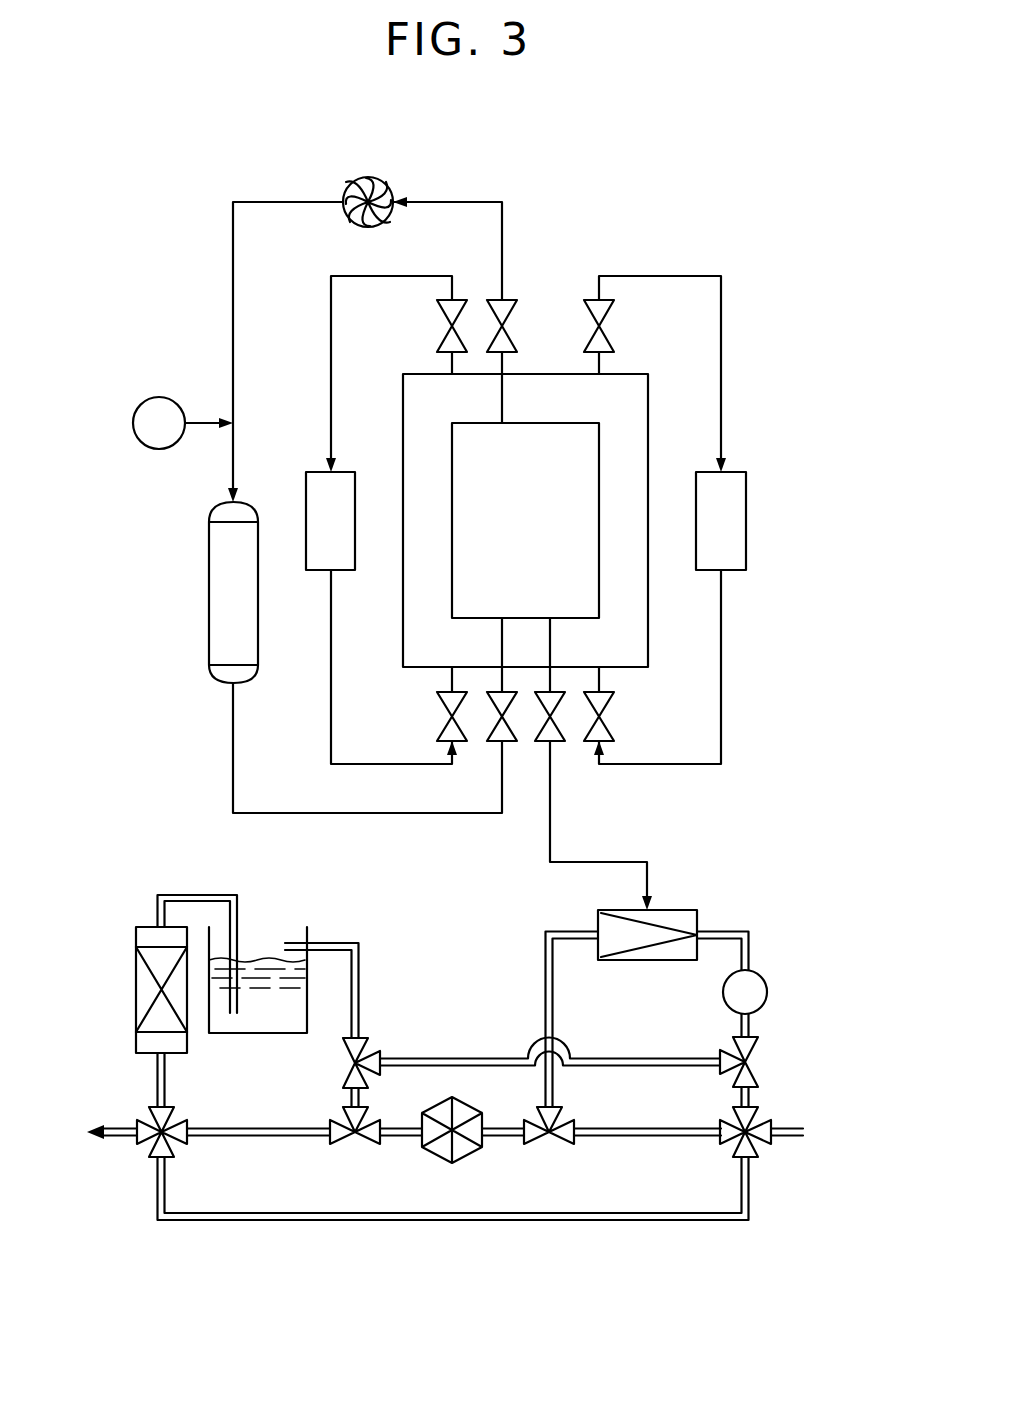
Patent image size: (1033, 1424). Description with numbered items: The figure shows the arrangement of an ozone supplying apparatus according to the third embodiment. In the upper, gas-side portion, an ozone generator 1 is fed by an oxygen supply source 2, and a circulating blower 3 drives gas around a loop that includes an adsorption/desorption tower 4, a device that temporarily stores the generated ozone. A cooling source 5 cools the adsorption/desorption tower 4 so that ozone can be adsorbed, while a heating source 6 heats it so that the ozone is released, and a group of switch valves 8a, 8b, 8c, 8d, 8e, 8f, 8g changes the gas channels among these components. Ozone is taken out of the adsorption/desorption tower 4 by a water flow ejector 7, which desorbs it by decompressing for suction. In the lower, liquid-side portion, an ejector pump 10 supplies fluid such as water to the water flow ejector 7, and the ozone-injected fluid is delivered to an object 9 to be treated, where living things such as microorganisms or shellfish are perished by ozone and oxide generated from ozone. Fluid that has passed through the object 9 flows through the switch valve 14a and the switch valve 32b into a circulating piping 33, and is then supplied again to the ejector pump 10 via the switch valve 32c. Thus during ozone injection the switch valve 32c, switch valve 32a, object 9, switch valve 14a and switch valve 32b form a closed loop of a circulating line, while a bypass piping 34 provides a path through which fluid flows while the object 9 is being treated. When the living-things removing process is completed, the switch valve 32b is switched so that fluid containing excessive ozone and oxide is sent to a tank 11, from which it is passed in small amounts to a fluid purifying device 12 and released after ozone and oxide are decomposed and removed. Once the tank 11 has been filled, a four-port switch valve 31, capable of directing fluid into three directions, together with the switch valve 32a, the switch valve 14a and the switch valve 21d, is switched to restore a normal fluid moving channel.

The ozone generator 1 is at (222, 607).
The oxygen supply source 2 is at (152, 402).
The circulating blower 3 is at (366, 198).
The adsorption/desorption tower 4 is at (648, 420).
The cooling source 5 is at (320, 495).
The heating source 6 is at (737, 530).
The water flow ejector 7 is at (675, 918).
The switch valve 8a is at (455, 318).
The switch valve 8b is at (445, 735).
The switch valve 8c is at (505, 320).
The switch valve 8d is at (495, 735).
The switch valve 8e is at (603, 320).
The switch valve 8f is at (548, 735).
The switch valve 8g is at (603, 735).
The object to be treated 9 is at (442, 1112).
The ejector pump 10 is at (767, 992).
The tank 11 is at (308, 990).
The fluid purifying device 12 is at (142, 988).
The switch valve 14a is at (372, 1138).
The switch valve 21d is at (152, 1153).
The four-port switch valve 31 is at (750, 1148).
The switch valve 32a is at (565, 1140).
The switch valve 32b is at (362, 1045).
The switch valve 32c is at (755, 1046).
The circulating piping 33 is at (480, 1060).
The bypass piping 34 is at (453, 1215).